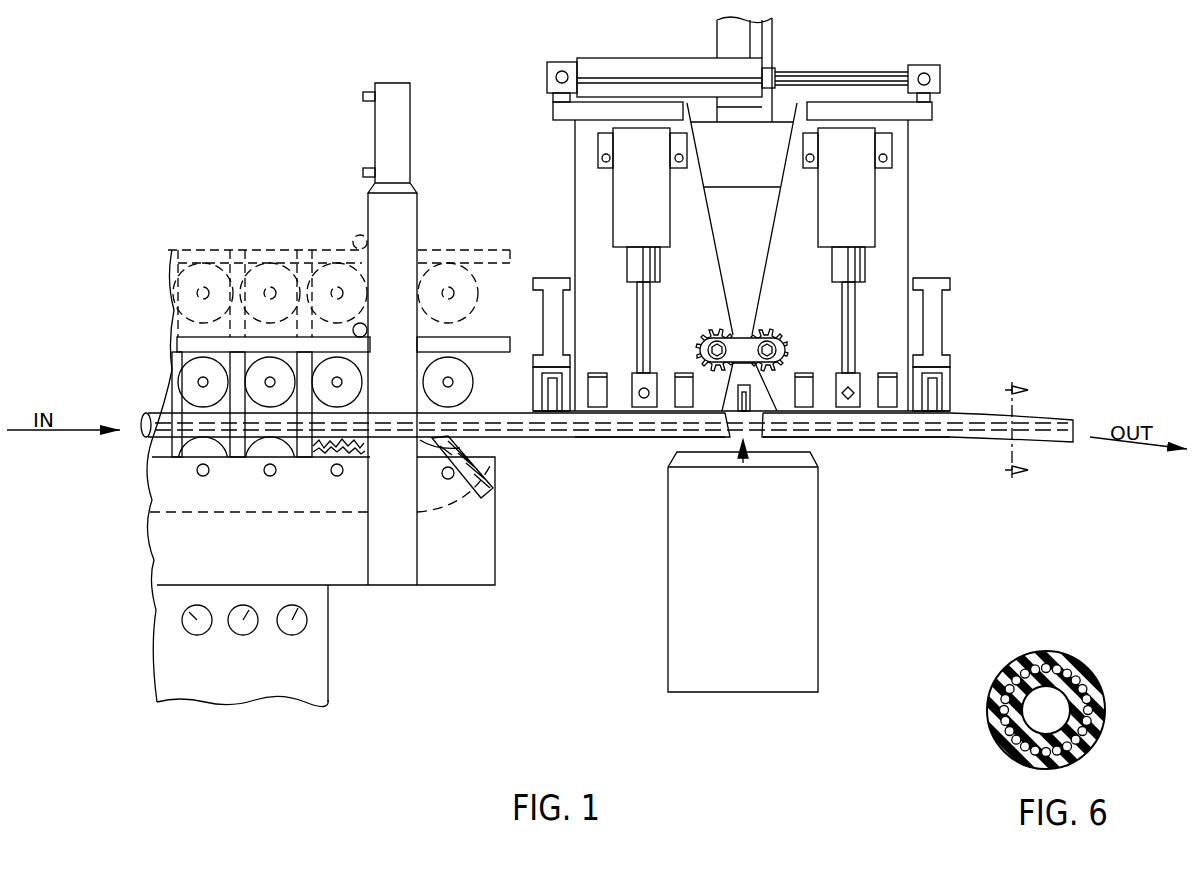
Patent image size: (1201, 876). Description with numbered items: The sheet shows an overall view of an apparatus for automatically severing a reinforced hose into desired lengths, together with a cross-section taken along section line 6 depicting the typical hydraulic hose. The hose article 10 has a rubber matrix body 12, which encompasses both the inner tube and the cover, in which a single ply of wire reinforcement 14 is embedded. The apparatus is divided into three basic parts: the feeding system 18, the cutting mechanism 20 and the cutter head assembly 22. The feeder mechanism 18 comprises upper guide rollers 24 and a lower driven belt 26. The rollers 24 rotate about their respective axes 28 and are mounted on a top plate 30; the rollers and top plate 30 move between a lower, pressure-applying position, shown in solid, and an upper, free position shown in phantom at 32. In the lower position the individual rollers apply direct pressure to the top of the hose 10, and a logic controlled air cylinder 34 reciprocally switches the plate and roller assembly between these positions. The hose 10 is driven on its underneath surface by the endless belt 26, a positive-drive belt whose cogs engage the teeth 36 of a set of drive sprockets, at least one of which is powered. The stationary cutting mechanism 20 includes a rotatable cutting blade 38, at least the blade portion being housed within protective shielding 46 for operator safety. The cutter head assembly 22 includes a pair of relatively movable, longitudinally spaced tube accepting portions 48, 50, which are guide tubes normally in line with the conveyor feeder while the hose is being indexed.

In FIG. 1, the section line 6 is at (1031, 436).
In FIG. 1, the hose article 10 is at (517, 428).
In FIG. 6, the hose article 10 is at (1050, 652).
In FIG. 6, the rubber matrix body 12 is at (995, 718).
In FIG. 6, the wire reinforcement 14 is at (1090, 700).
In FIG. 1, the feeding system 18 is at (208, 180).
In FIG. 1, the cutting mechanism 20 is at (852, 542).
In FIG. 1, the cutter head assembly 22 is at (963, 188).
In FIG. 1, the upper guide rollers 24 is at (260, 390).
In FIG. 1, the lower driven belt 26 is at (247, 513).
In FIG. 1, the roller axes 28 is at (452, 378).
In FIG. 1, the top plate 30 is at (197, 347).
In FIG. 1, the upper free position 32 is at (160, 262).
In FIG. 1, the logic controlled air cylinder 34 is at (397, 140).
In FIG. 1, the teeth of drive sprockets 36 is at (487, 460).
In FIG. 1, the rotatable cutting blade 38 is at (752, 455).
In FIG. 1, the protective shielding 46 is at (686, 634).
In FIG. 1, the tube accepting portion 48 is at (620, 430).
In FIG. 1, the tube accepting portion 50 is at (862, 432).